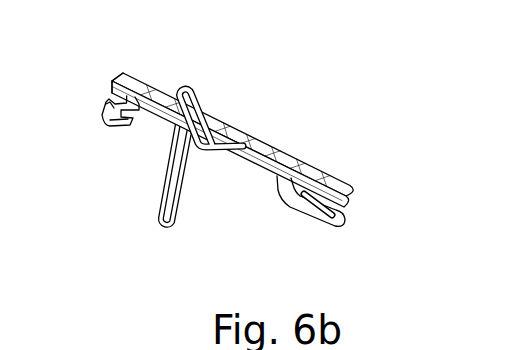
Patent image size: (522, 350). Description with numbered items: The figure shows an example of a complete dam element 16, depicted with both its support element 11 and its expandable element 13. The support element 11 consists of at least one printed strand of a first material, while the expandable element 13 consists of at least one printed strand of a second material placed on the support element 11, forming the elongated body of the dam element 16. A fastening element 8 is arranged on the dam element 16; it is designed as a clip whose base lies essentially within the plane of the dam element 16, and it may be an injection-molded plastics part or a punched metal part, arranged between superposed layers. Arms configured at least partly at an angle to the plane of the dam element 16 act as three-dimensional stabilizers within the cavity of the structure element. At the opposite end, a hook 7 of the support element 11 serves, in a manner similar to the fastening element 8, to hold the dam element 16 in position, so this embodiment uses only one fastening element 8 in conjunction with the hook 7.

The hook 7 is at (349, 217).
The fastening element 8 is at (92, 110).
The support element 11 is at (258, 172).
The expandable element 13 is at (314, 168).
The dam element 16 is at (242, 145).